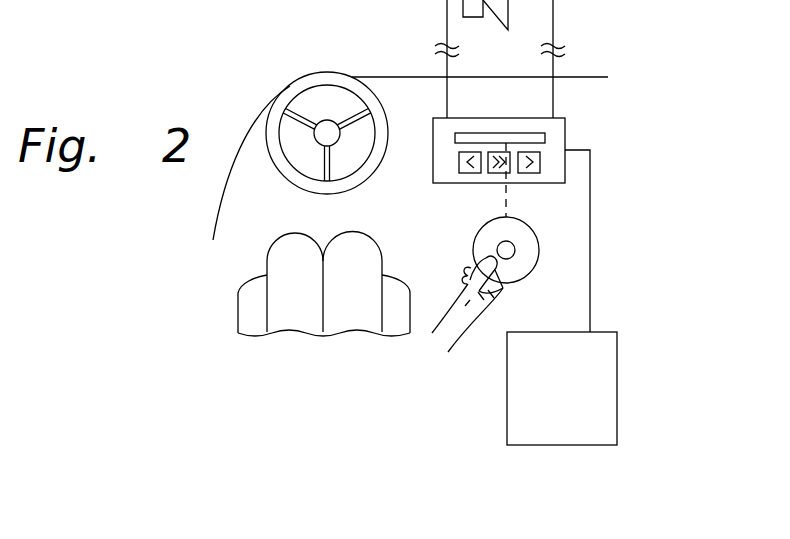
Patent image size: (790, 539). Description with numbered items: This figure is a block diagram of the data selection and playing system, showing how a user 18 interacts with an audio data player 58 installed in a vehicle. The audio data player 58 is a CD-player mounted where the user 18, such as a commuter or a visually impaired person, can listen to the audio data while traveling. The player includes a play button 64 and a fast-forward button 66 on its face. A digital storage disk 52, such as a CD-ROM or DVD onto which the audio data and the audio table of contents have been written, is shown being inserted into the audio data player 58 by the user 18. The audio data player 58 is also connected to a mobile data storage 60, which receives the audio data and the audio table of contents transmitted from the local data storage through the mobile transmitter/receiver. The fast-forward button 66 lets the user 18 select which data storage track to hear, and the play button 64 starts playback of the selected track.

The user 18 is at (278, 306).
The digital storage disk 52 is at (515, 275).
The audio data player 58 is at (532, 168).
The mobile data storage 60 is at (617, 362).
The play button 64 is at (497, 173).
The fast-forward button 66 is at (527, 173).